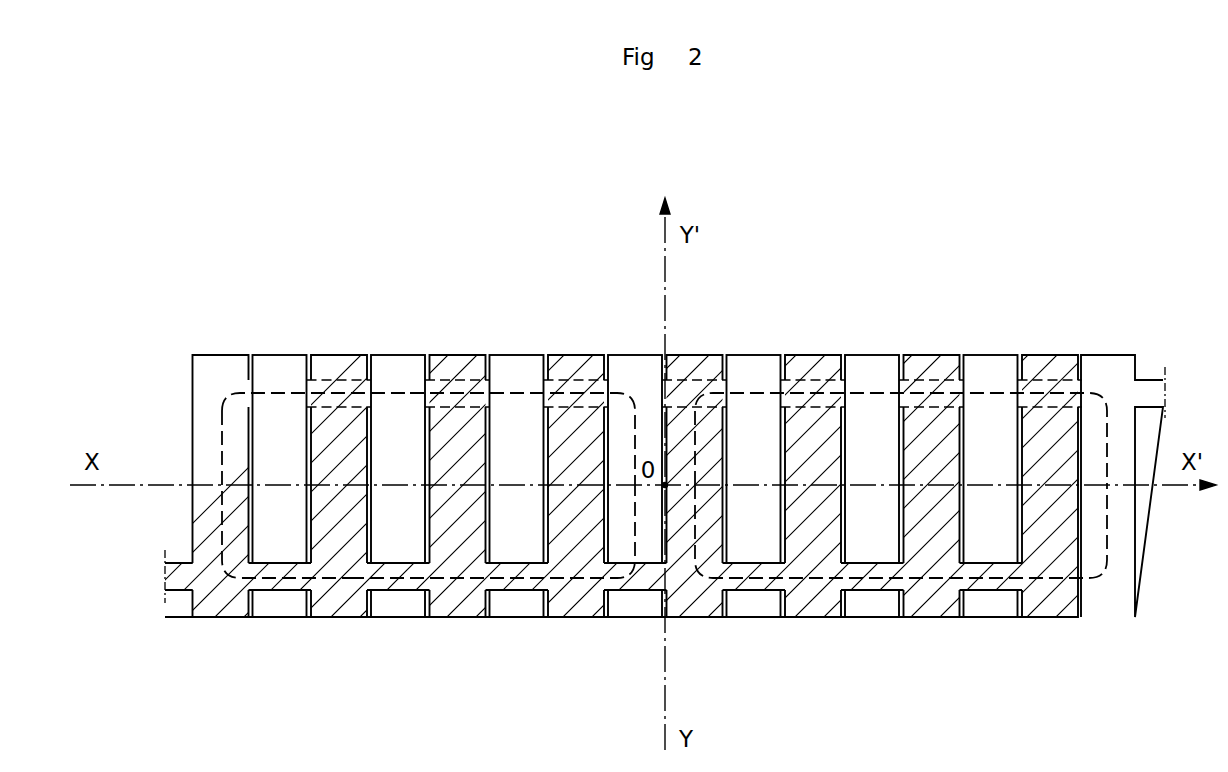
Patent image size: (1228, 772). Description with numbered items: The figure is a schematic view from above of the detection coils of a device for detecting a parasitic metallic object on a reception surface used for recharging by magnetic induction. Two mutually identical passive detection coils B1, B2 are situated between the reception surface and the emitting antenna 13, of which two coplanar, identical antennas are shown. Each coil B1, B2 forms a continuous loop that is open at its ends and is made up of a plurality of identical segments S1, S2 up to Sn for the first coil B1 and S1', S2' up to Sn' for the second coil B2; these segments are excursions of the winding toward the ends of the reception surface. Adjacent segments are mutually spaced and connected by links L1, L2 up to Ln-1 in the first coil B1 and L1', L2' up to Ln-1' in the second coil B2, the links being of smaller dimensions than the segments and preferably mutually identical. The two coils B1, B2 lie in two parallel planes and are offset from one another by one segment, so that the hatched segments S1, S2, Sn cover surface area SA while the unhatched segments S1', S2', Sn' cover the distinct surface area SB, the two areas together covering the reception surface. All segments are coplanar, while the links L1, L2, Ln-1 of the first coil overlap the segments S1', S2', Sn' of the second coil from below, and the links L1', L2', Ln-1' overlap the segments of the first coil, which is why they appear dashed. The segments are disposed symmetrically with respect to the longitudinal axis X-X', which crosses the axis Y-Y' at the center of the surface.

The surface area of the segments of the first coil SA is at (213, 527).
The surface area of the segments of the second coil SB is at (277, 528).
The first segment of the first coil S1 is at (221, 443).
The first segment of the second coil S1' is at (280, 443).
The second segment of the first coil S2 is at (339, 443).
The second segment of the second coil S2' is at (398, 443).
The n-th segment of the first coil Sn is at (1050, 442).
The n-th segment of the second coil Sn' is at (1121, 442).
The first link of the first coil L1 is at (286, 544).
The second link of the first coil L2 is at (492, 581).
The (n-1)-th link of the first coil Ln-1 is at (901, 581).
The first link of the second coil L1' is at (316, 321).
The second link of the second coil L2' is at (522, 358).
The (n-1)-th link of the second coil Ln-1' is at (901, 357).
The emitting antenna 13 is at (532, 393).
The first passive detection coil B1 is at (175, 603).
The second passive detection coil B2 is at (1150, 380).